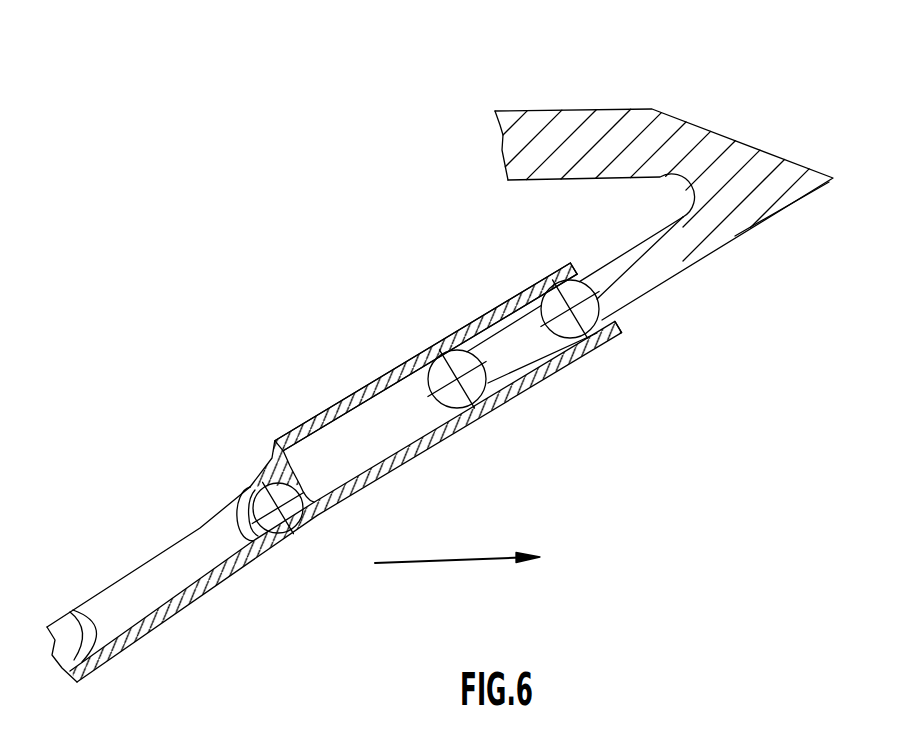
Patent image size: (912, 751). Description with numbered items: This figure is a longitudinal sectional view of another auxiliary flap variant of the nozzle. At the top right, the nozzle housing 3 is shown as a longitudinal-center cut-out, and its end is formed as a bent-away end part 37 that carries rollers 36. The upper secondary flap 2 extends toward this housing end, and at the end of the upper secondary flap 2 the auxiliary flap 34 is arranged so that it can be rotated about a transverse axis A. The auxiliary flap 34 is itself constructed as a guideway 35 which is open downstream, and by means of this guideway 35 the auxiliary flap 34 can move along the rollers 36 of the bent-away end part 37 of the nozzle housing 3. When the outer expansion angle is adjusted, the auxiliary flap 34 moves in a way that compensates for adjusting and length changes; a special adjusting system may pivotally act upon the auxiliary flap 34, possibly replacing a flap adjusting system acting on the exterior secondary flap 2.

The upper secondary flap 2 is at (149, 598).
The nozzle housing 3 is at (626, 98).
The auxiliary flap 34 is at (313, 428).
The guideway 35 is at (372, 427).
The rollers 36 is at (456, 375).
The bent-away end part 37 is at (688, 252).
The transverse axis A is at (250, 483).